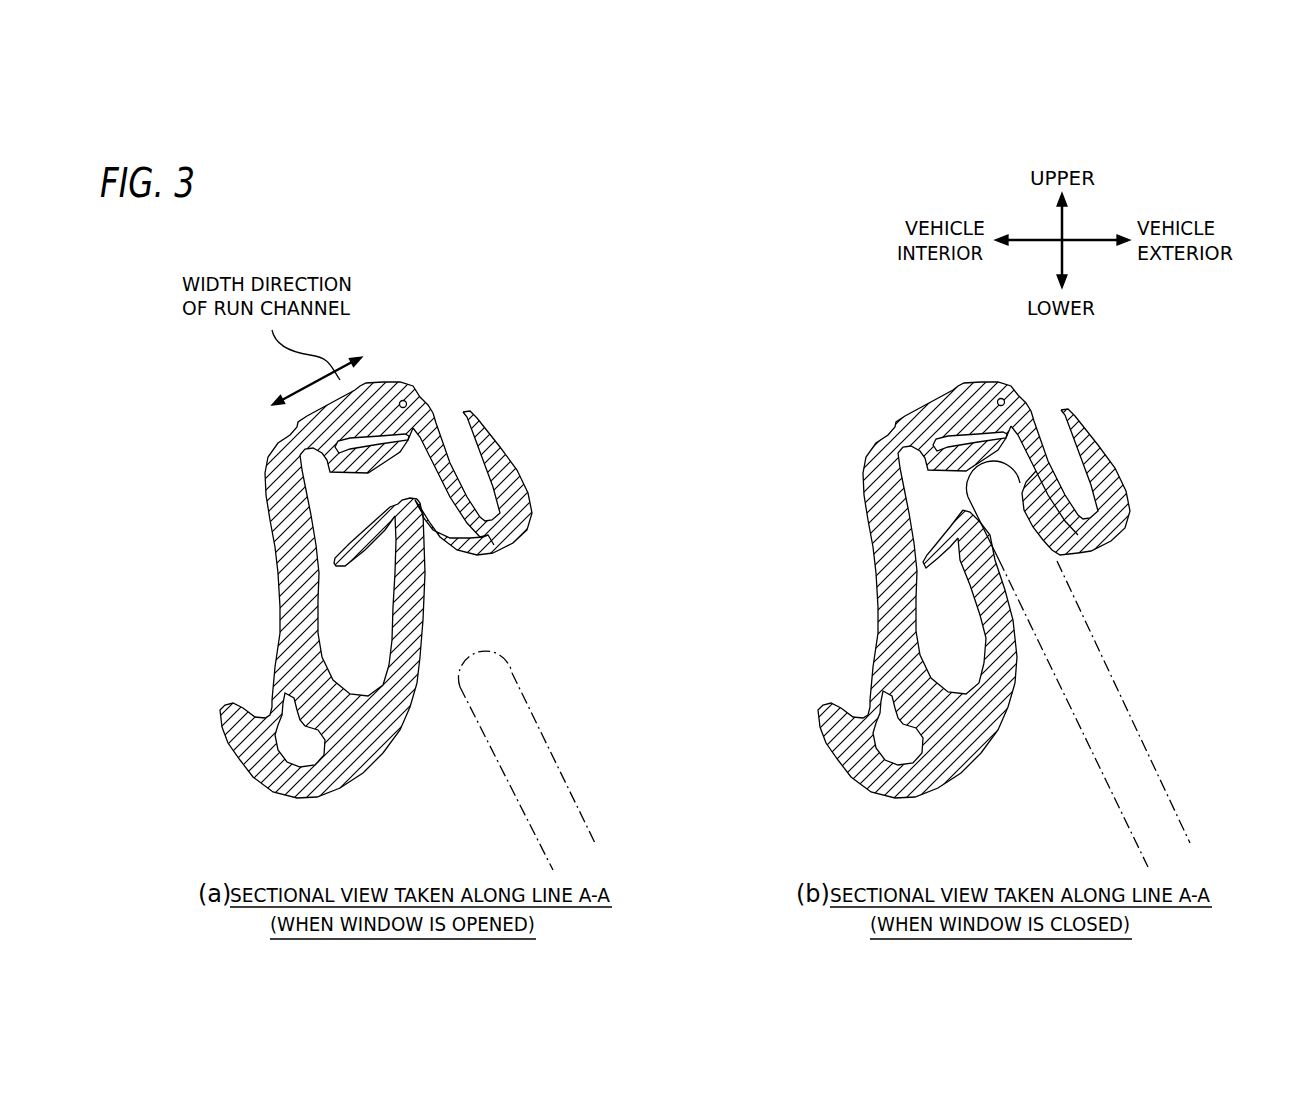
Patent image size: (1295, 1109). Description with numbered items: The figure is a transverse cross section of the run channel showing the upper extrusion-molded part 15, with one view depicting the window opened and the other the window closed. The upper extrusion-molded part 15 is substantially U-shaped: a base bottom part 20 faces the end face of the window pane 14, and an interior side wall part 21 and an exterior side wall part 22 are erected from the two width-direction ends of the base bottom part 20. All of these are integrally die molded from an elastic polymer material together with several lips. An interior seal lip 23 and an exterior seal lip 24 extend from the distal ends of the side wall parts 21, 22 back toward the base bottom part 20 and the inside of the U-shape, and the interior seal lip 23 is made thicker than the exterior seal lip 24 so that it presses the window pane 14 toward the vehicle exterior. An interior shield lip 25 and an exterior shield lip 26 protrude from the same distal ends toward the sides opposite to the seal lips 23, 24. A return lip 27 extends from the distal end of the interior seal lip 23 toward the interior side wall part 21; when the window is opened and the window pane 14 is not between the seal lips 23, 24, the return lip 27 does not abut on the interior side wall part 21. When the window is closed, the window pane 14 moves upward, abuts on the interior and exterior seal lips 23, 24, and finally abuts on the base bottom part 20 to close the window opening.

The window pane 14 is at (553, 752).
The upper extrusion-molded part 15 is at (278, 440).
The base bottom part 20 is at (357, 386).
The interior side wall part 21 is at (297, 578).
The exterior side wall part 22 is at (477, 420).
The interior seal lip 23 is at (425, 563).
The exterior seal lip 24 is at (432, 540).
The interior shield lip 25 is at (250, 757).
The exterior shield lip 26 is at (492, 450).
The return lip 27 is at (358, 534).